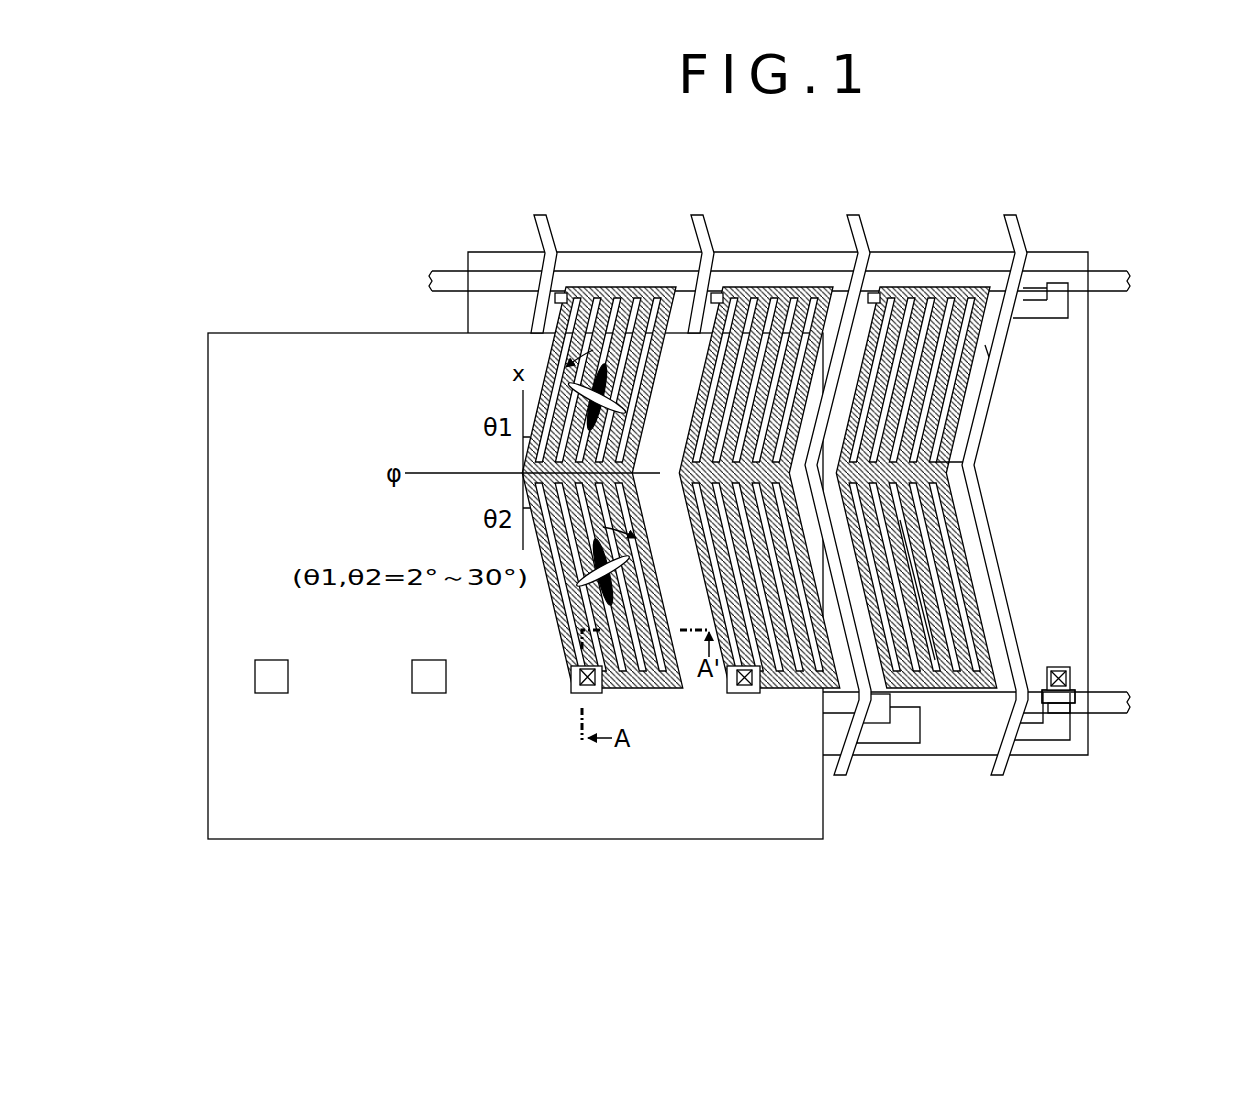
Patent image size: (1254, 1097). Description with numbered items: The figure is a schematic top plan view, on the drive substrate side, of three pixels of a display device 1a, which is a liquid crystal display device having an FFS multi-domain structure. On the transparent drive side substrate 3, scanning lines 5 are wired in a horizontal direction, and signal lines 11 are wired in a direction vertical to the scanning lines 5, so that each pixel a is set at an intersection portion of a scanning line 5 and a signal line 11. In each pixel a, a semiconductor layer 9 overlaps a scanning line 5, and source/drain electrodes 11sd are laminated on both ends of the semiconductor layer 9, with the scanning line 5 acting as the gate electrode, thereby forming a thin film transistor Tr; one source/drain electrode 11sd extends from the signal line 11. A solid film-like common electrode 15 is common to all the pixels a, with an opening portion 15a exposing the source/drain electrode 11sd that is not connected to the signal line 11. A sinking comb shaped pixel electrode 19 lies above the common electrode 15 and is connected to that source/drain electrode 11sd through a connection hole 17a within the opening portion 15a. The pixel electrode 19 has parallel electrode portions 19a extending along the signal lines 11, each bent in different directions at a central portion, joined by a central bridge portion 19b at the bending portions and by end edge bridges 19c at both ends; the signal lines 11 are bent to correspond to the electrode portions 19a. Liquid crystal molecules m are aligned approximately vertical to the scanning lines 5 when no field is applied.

The display device 1a is at (305, 201).
The drive side substrate 3 is at (1063, 251).
The scanning line 5 is at (1130, 281).
The semiconductor layer 9 is at (1076, 698).
The signal line 11 is at (539, 213).
The source/drain electrode 11sd is at (1071, 672).
The common electrode 15 is at (253, 332).
The opening portion 15a is at (271, 694).
The connection hole 17a is at (1056, 667).
The pixel electrode 19 is at (587, 287).
The electrode portion 19a is at (921, 542).
The central bridge portion 19b is at (937, 472).
The end edge bridge 19c is at (967, 287).
The pixel a is at (984, 351).
The thin film transistor Tr is at (871, 706).
The liquid crystal molecule m is at (625, 408).